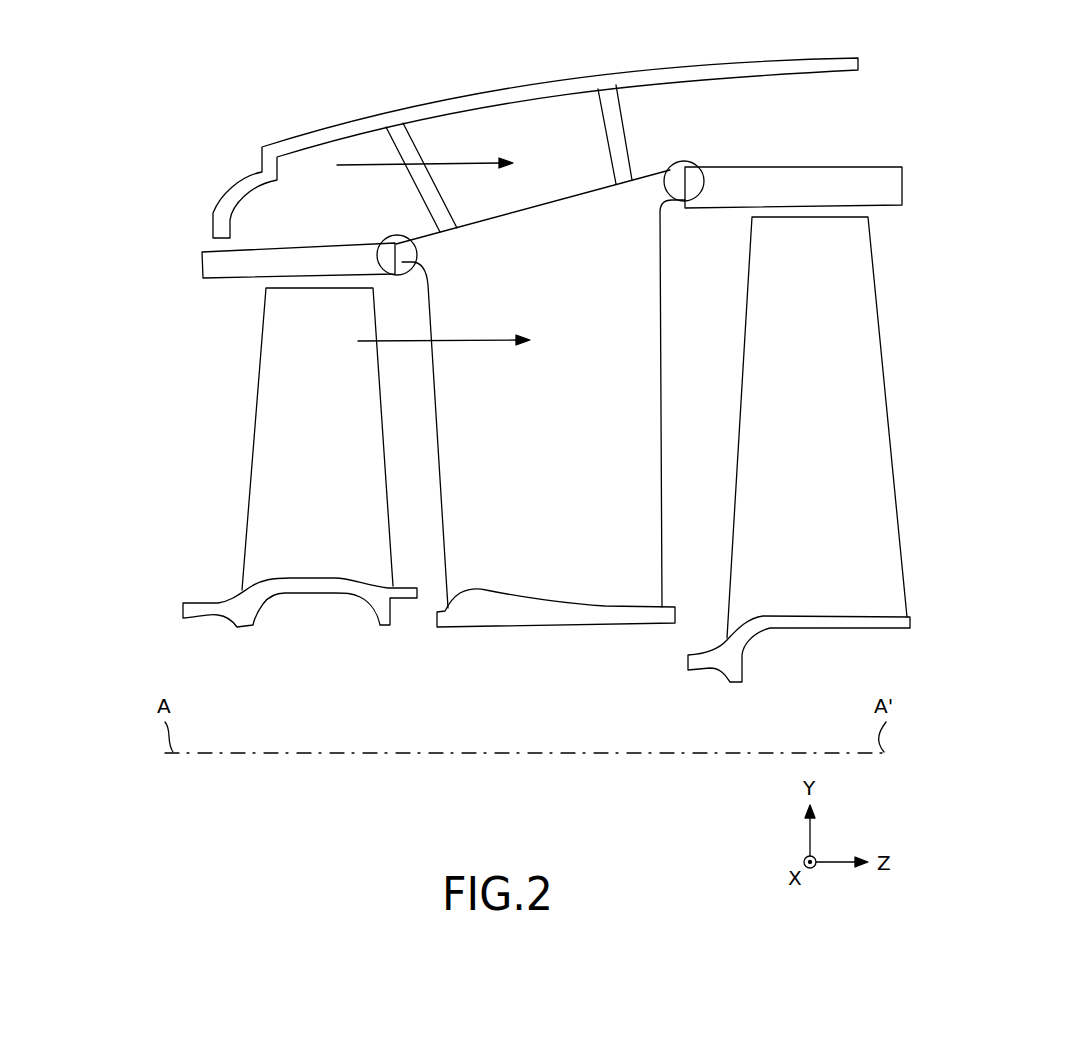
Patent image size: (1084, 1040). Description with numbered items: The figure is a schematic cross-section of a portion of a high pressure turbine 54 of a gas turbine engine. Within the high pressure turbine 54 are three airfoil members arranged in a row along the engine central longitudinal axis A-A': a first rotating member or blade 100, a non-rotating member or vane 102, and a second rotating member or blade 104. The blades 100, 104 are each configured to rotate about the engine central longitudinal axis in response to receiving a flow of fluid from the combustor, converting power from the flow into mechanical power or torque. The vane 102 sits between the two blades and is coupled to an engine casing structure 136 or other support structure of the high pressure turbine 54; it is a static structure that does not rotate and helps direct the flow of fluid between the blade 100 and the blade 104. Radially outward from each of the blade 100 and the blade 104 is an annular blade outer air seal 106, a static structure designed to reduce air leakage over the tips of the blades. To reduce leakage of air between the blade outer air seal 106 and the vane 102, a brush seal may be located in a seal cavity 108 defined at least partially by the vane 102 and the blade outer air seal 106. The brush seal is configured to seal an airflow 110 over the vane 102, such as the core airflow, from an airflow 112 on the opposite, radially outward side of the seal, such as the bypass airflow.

The high pressure turbine 54 is at (193, 105).
The engine casing structure 136 is at (528, 92).
The annular blade outer air seal (BOAS) 106 is at (228, 267).
The seal cavity 108 is at (388, 232).
The airflow 112 is at (407, 166).
The airflow 110 is at (424, 341).
The first rotating member or blade 100 is at (332, 404).
The non-rotating member or vane 102 is at (564, 400).
The second rotating member or blade 104 is at (828, 386).